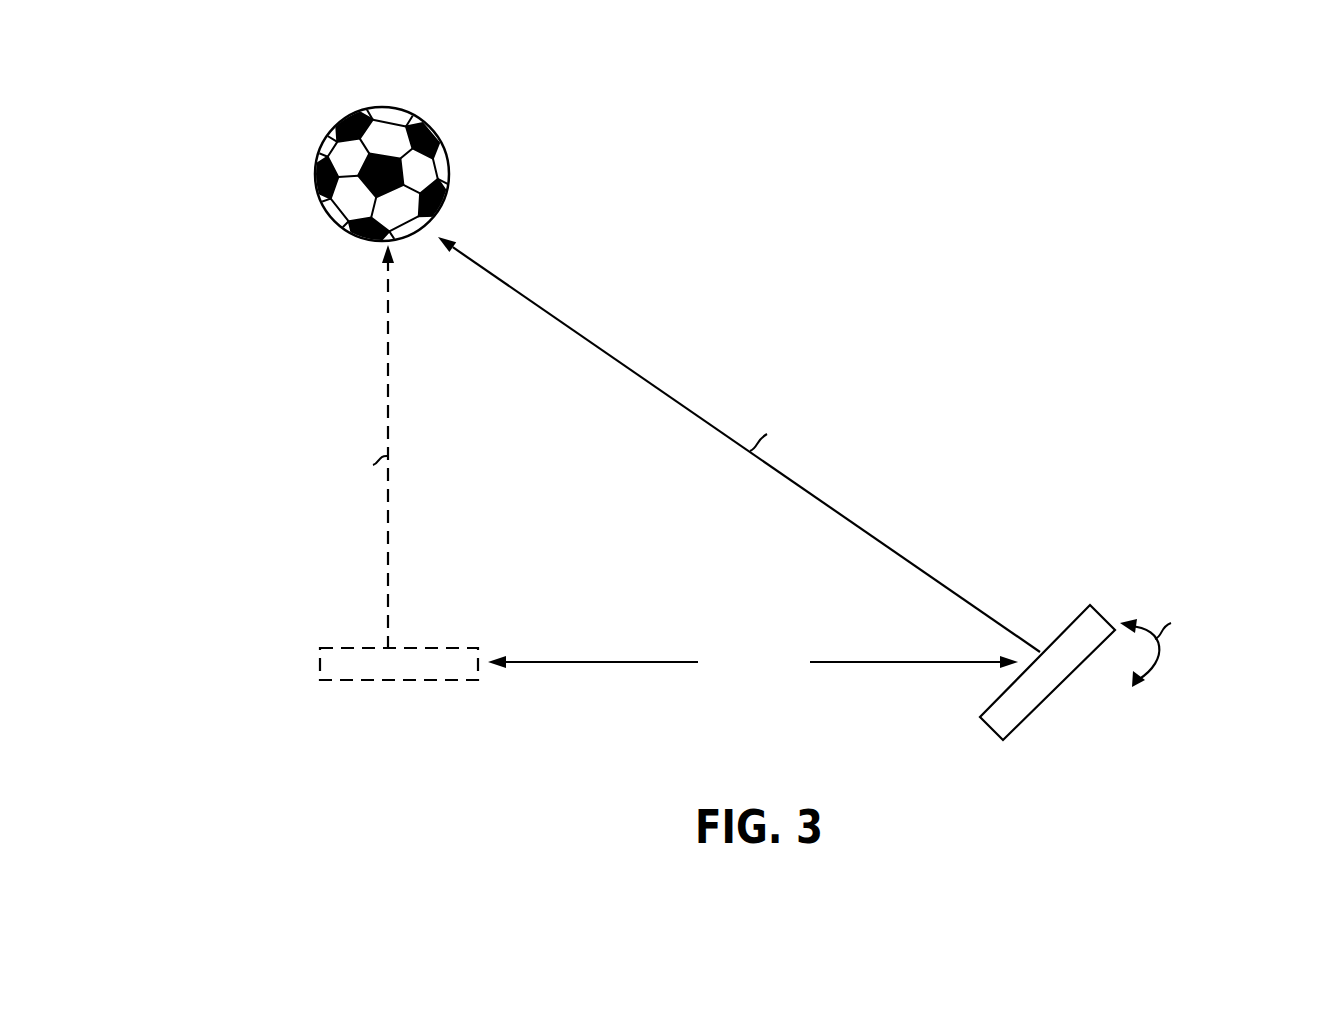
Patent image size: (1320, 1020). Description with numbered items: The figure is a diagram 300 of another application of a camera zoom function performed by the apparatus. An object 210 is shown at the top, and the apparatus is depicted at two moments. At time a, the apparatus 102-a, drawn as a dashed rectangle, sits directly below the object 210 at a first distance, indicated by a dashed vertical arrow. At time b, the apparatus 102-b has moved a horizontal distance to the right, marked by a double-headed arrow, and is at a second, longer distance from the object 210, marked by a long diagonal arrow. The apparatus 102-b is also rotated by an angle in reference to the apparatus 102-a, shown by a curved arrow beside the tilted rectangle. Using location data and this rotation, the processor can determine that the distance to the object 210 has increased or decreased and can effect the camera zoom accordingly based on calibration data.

The diagram 300 is at (215, 88).
The object 210 is at (403, 108).
The apparatus at time a 102-a is at (438, 647).
The apparatus at time b 102-b is at (1040, 702).